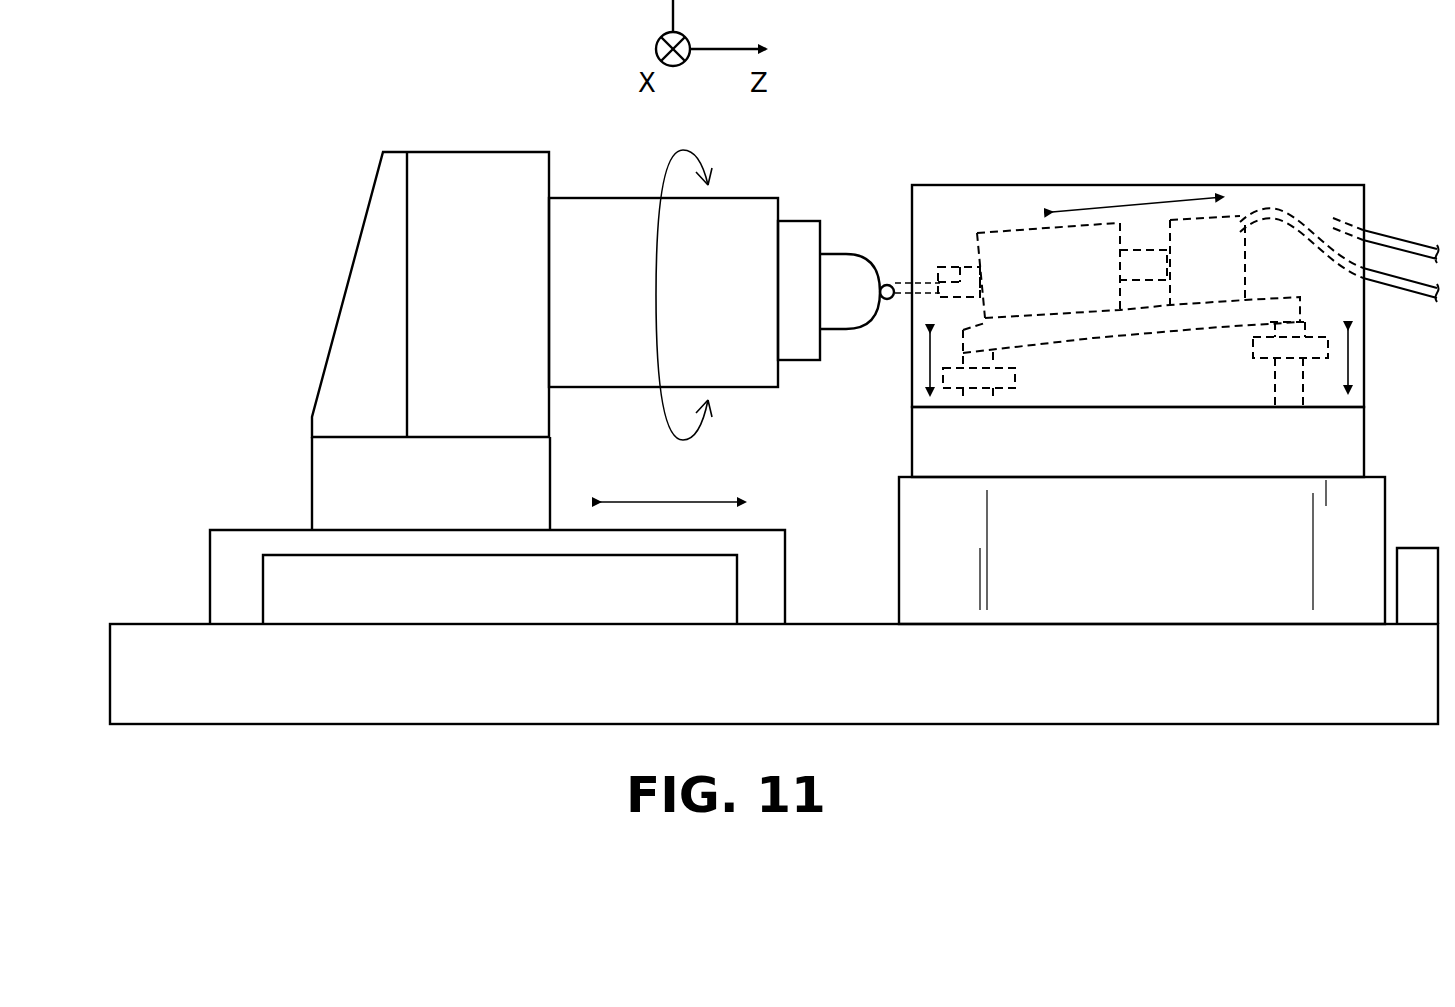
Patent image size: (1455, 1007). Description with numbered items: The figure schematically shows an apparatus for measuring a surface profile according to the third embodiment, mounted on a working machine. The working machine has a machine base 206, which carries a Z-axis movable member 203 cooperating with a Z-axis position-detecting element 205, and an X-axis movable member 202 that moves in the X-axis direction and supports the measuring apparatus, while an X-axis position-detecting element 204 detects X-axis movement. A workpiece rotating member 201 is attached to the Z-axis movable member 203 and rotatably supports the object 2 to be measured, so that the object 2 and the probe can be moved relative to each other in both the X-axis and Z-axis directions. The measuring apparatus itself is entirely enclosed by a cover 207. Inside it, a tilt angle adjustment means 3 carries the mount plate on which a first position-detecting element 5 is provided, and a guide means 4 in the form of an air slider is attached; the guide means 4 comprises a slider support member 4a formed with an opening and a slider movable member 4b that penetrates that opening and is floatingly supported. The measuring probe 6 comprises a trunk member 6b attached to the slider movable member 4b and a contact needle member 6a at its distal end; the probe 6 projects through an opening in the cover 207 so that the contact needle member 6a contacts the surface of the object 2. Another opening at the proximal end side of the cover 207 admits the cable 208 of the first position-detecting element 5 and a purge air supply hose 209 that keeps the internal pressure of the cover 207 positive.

The workpiece rotating member 201 is at (580, 207).
The object to be measured 2 is at (842, 258).
The contact needle member 6a is at (887, 284).
The measuring probe 6 is at (890, 324).
The trunk member 6b is at (942, 268).
The guide means 4 is at (1040, 212).
The slider support member 4a is at (1010, 245).
The slider movable member 4b is at (970, 262).
The first position-detecting element 5 is at (1170, 231).
The tilt angle adjustment means 3 is at (1018, 378).
The cover 207 is at (1270, 185).
The purge air supply hose 209 is at (1398, 237).
The cable 208 is at (1407, 288).
The Z-axis movable member 203 is at (228, 540).
The Z-axis position-detecting element 205 is at (297, 616).
The machine base 206 is at (1175, 709).
The X-axis movable member 202 is at (906, 512).
The X-axis position-detecting element 204 is at (1418, 556).